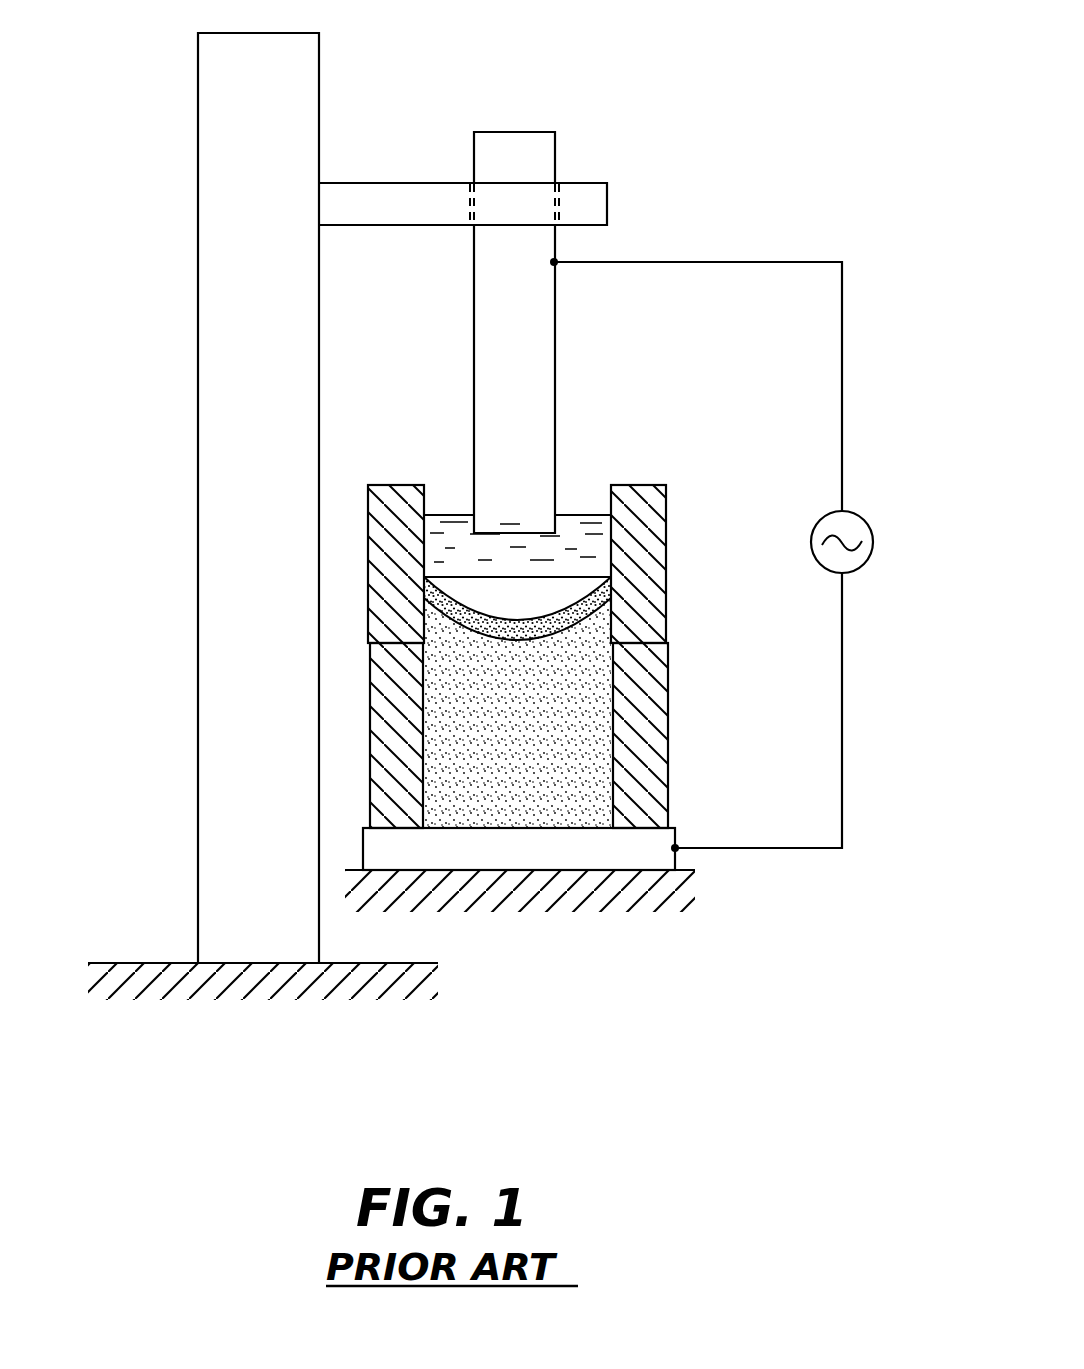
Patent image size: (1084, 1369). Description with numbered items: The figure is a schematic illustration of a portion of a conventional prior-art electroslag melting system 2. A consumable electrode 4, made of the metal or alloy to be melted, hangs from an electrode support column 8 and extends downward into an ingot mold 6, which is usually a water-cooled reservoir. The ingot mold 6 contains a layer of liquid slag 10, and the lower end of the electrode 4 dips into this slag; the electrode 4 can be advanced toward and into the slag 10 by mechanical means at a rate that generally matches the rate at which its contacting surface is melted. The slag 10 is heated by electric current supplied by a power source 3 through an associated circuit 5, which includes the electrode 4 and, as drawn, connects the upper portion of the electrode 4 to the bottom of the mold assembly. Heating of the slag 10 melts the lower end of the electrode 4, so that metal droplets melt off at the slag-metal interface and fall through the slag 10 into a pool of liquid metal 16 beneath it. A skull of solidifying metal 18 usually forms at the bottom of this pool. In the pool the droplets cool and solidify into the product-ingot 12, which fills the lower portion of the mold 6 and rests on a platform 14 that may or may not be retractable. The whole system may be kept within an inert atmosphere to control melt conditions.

The electroslag melting system 2 is at (674, 350).
The power source 3 is at (853, 526).
The consumable electrode 4 is at (552, 330).
The circuit 5 is at (845, 312).
The ingot mold 6 is at (652, 568).
The electrode support column 8 is at (203, 193).
The liquid slag 10 is at (580, 517).
The product-ingot 12 is at (590, 753).
The platform 14 is at (660, 839).
The liquid metal pool 16 is at (534, 611).
The skull of solidifying metal 18 is at (580, 618).